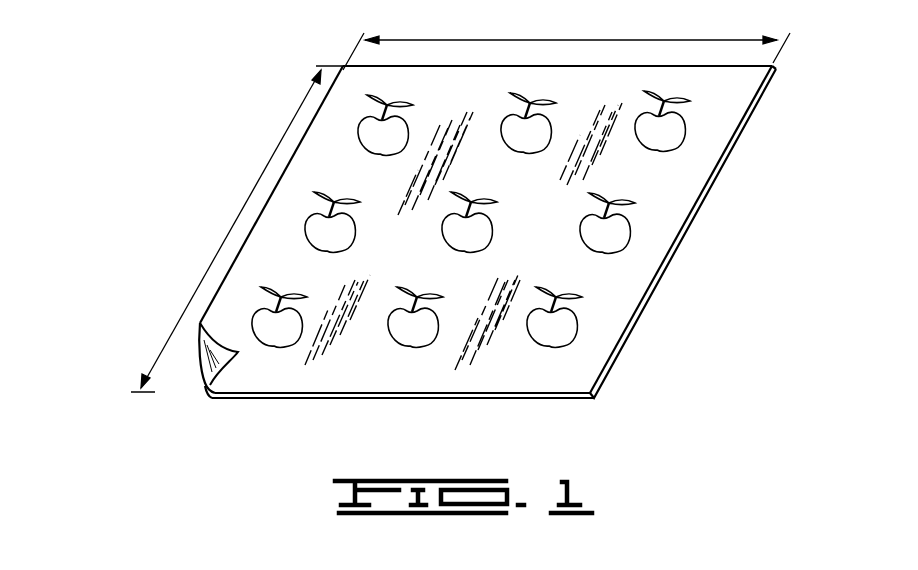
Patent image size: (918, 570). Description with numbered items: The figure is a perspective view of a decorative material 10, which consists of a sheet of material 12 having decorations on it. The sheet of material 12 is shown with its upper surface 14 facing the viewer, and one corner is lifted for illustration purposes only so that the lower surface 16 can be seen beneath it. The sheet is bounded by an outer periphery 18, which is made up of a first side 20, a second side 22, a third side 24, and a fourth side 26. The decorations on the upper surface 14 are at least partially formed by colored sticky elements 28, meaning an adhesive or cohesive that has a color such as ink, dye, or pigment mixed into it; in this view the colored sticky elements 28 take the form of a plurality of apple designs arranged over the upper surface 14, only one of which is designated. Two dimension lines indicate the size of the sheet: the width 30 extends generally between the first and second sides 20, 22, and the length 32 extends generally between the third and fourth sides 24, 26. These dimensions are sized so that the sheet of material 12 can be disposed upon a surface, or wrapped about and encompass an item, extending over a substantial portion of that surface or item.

The decorative material 10 is at (428, 220).
The sheet of material 12 is at (536, 64).
The upper surface 14 is at (505, 230).
The lower surface 16 is at (216, 357).
The outer periphery 18 is at (661, 283).
The first side 20 is at (681, 242).
The second side 22 is at (258, 214).
The third side 24 is at (632, 64).
The fourth side 26 is at (458, 399).
The colored sticky elements 28 is at (566, 322).
The width 30 is at (490, 40).
The length 32 is at (262, 172).